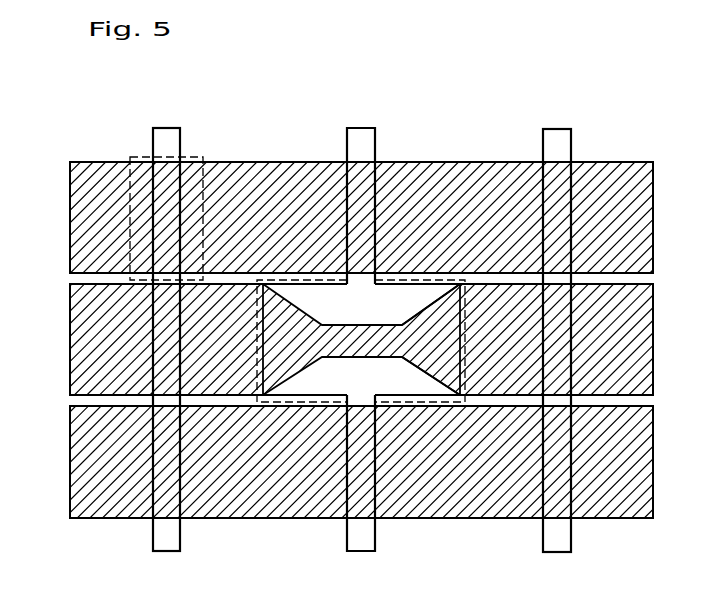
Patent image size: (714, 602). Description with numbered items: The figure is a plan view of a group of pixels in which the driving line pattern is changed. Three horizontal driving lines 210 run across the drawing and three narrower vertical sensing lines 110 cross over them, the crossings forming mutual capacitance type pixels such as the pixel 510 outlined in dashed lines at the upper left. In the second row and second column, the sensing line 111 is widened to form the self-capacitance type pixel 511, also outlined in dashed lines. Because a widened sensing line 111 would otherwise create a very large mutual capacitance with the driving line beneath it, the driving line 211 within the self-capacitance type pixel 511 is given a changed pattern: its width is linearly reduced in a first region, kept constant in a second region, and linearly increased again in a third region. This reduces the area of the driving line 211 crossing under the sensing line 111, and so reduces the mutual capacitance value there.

The sensing line 110 is at (162, 128).
The widened sensing line 111 is at (441, 282).
The driving line 210 is at (77, 222).
The changed-pattern driving line 211 is at (311, 305).
The pixel 510 is at (143, 156).
The self-capacitance type pixel 511 is at (407, 280).